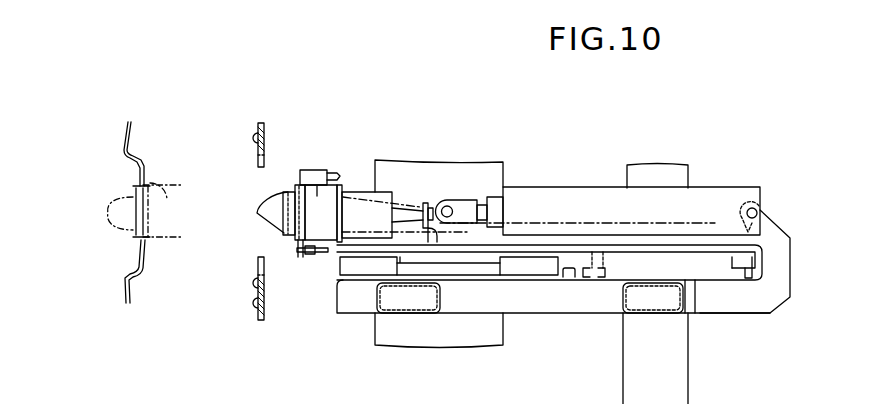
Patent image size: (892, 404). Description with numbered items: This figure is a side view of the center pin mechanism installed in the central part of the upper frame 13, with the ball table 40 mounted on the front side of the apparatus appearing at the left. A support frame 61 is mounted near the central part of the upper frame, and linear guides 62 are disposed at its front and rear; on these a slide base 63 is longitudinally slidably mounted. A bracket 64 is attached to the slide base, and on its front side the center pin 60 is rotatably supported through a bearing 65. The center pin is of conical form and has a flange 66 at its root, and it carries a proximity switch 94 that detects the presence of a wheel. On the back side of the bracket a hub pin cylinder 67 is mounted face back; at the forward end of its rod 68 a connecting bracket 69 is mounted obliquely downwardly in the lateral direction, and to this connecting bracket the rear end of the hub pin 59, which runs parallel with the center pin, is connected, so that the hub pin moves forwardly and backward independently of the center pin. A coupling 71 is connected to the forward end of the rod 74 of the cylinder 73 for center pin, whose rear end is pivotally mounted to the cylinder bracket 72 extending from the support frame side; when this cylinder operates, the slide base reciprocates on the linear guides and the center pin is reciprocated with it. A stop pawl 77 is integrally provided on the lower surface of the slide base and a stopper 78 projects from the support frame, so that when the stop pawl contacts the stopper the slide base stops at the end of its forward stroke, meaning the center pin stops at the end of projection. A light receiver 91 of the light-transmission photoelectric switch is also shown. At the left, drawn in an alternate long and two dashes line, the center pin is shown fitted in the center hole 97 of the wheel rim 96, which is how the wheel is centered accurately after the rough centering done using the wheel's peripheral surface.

The upper frame 13 is at (697, 163).
The ball table 40 is at (245, 321).
The hub pin 59 is at (408, 253).
The center pin 60 is at (123, 200).
The support frame 61 is at (595, 317).
The linear guides 62 is at (340, 263).
The slide base 63 is at (707, 252).
The bracket 64 is at (340, 192).
The bearing 65 is at (317, 190).
The flange 66 is at (293, 226).
The hub pin cylinder 67 is at (360, 195).
The rod 68 is at (417, 205).
The connecting bracket 69 is at (426, 205).
The coupling 71 is at (458, 198).
The cylinder bracket 72 is at (745, 307).
The cylinder for center pin 73 is at (573, 202).
The rod 74 is at (485, 202).
The stop pawl 77 is at (752, 280).
The stopper 78 is at (568, 280).
The light receiver 91 is at (305, 172).
The proximity switch 94 is at (310, 256).
The wheel rim 96 is at (120, 287).
The center hole 97 is at (160, 193).